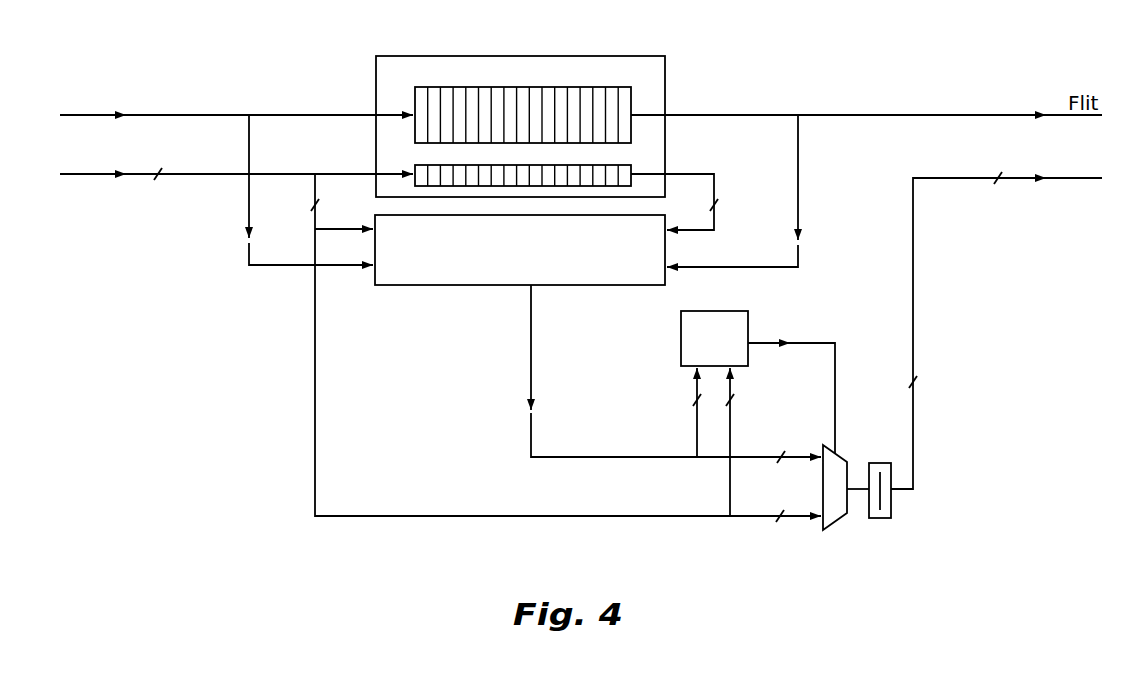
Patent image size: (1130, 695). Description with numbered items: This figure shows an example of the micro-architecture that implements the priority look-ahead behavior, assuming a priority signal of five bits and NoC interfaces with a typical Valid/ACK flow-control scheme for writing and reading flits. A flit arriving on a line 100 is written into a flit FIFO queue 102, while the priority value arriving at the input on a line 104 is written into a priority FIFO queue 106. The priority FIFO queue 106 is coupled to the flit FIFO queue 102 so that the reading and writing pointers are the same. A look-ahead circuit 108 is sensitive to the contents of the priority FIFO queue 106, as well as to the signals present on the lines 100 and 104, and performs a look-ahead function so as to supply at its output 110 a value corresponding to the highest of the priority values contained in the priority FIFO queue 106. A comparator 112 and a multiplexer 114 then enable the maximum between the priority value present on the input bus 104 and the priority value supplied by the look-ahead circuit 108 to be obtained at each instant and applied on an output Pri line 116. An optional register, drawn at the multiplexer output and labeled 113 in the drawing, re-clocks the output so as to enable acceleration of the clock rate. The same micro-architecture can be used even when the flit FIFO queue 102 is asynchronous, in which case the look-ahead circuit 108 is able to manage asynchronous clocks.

The line 100 is at (102, 113).
The flit FIFO queue 102 is at (623, 88).
The line 104 is at (102, 176).
The priority FIFO queue 106 is at (623, 165).
The look-ahead circuit 108 is at (418, 276).
The output 110 is at (575, 455).
The comparator 112 is at (835, 520).
The register 113 is at (881, 520).
The multiplexer 114 is at (735, 326).
The output Pri line 116 is at (913, 314).